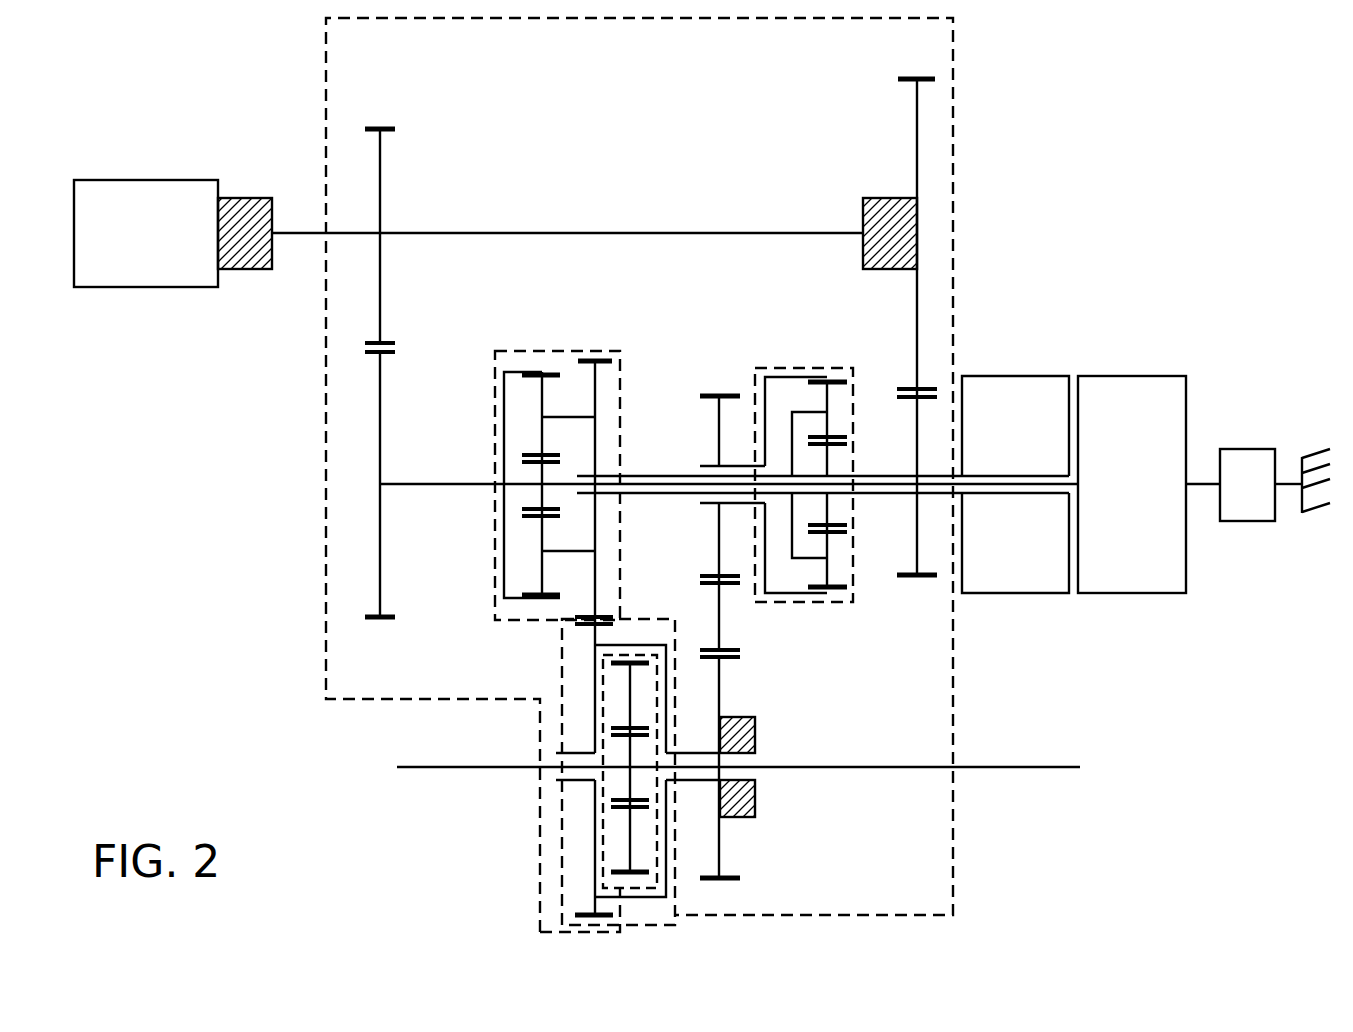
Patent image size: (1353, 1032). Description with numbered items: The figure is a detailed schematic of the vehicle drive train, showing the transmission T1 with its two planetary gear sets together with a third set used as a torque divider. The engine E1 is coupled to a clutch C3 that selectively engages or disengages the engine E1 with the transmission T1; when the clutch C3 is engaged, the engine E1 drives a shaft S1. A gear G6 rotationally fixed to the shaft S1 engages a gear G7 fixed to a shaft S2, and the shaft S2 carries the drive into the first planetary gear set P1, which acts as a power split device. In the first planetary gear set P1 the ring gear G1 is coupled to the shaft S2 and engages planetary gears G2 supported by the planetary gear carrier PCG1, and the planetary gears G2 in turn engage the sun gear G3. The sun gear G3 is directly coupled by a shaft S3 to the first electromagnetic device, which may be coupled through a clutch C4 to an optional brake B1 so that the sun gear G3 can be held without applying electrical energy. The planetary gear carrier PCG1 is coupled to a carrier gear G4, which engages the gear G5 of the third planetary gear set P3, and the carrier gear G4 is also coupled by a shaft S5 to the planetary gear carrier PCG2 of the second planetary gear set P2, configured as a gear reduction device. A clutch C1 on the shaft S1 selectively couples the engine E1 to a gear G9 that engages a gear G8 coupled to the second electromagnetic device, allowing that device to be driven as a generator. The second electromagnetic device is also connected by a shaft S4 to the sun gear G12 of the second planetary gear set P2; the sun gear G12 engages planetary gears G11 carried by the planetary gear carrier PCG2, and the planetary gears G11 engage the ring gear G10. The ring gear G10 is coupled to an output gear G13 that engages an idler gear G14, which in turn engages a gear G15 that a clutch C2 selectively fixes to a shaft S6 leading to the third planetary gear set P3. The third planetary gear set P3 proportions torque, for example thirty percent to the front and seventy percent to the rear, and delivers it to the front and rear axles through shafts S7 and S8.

The transmission T1 is at (962, 162).
The engine E1 is at (146, 233).
The clutch C3 is at (245, 198).
The shaft S1 is at (641, 232).
The gear G6 is at (382, 283).
The gear G7 is at (382, 428).
The shaft S2 is at (402, 487).
The first planetary gear set P1 is at (495, 568).
The ring gear G1 is at (531, 371).
The planetary gear G2 is at (540, 437).
The sun gear G3 is at (540, 500).
The carrier gear G4 is at (597, 567).
The planetary gear carrier PCG1 is at (563, 416).
The gear G5 is at (593, 637).
The shaft S5 is at (666, 474).
The shaft S4 is at (881, 487).
The sun gear G12 is at (825, 457).
The output gear G13 is at (718, 537).
The idler gear G14 is at (721, 612).
The gear G15 is at (721, 700).
The clutch C2 is at (757, 745).
The second planetary gear set P2 is at (765, 368).
The ring gear G10 is at (820, 378).
The planetary gear G11 is at (828, 420).
The planetary gear carrier PCG2 is at (793, 530).
The gear G9 is at (915, 318).
The gear G8 is at (915, 460).
The clutch C1 is at (888, 198).
The shaft S3 is at (1033, 487).
The clutch C4 is at (1261, 485).
The brake B1 is at (1318, 452).
The third planetary gear set P3 is at (562, 682).
The shaft S6 is at (684, 783).
The shaft S7 is at (433, 769).
The shaft S8 is at (1027, 769).